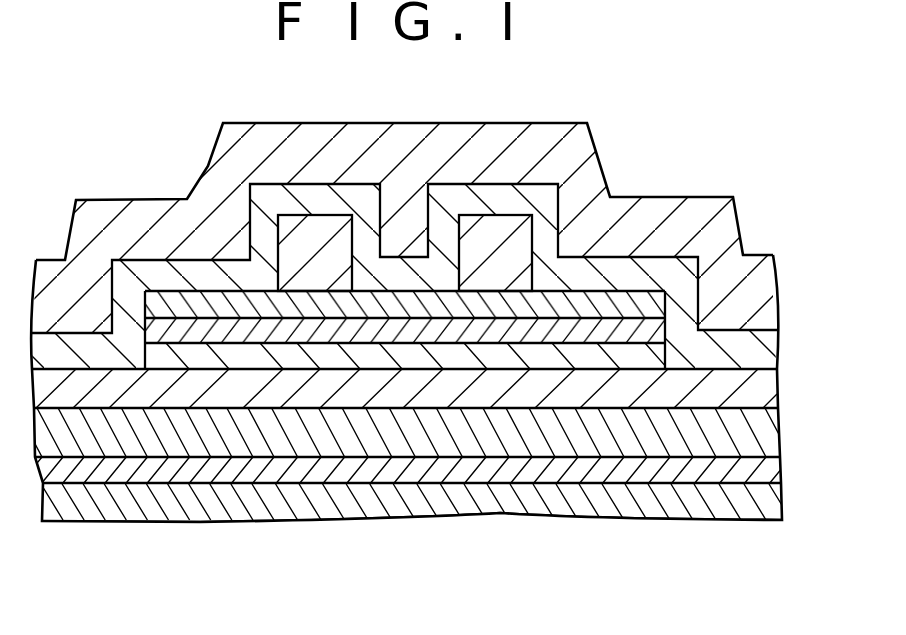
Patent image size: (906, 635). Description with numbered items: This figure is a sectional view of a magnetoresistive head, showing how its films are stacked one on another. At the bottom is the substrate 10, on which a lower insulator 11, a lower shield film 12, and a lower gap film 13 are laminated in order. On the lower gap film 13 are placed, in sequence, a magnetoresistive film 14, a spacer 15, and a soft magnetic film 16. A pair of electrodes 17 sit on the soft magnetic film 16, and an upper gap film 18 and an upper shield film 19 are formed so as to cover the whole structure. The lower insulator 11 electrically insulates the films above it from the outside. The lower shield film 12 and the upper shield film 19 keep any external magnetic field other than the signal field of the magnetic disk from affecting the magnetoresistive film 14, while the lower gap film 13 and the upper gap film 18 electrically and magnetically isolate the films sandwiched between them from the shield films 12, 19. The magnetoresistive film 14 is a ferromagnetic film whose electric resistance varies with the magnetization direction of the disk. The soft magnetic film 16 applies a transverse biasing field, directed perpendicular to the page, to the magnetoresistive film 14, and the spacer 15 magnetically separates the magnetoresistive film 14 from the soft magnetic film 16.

The substrate 10 is at (213, 498).
The lower insulator 11 is at (277, 468).
The lower shield film 12 is at (343, 423).
The lower gap film 13 is at (397, 380).
The magnetoresistive film 14 is at (662, 360).
The spacer 15 is at (610, 323).
The soft magnetic film 16 is at (550, 305).
The electrodes 17 is at (480, 240).
The upper gap film 18 is at (325, 202).
The upper shield film 19 is at (187, 198).